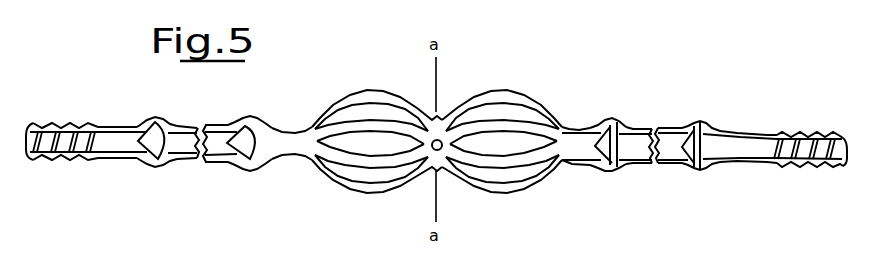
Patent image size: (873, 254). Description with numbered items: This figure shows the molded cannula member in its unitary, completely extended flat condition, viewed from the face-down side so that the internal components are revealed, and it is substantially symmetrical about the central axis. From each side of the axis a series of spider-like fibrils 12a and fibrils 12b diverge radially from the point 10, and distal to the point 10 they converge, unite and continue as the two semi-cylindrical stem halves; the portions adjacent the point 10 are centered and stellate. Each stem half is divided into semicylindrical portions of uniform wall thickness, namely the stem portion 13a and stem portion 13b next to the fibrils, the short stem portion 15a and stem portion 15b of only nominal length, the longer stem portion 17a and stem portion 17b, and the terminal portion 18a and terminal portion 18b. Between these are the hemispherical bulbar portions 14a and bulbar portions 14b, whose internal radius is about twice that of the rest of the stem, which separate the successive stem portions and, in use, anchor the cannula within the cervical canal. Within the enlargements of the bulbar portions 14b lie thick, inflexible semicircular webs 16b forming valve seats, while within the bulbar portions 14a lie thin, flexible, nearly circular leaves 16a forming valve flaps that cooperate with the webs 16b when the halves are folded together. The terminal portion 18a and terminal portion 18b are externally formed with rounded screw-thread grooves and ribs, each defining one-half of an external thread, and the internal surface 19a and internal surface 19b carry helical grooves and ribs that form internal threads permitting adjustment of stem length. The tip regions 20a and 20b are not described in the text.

The point 10 is at (438, 152).
The fibrils 12a is at (385, 188).
The fibrils 12b is at (472, 180).
The stem portion 13a is at (287, 128).
The stem portion 13b is at (570, 128).
The bulbar portion 14a is at (165, 166).
The bulbar portion 14b is at (604, 170).
The stem portion 15a is at (188, 127).
The stem portion 15b is at (670, 126).
The leaves 16a is at (157, 133).
The webs 16b is at (616, 142).
The stem portion 17a is at (123, 162).
The stem portion 17b is at (739, 165).
The terminal portion 18a is at (60, 160).
The terminal portion 18b is at (797, 167).
The internal surface 19a is at (73, 138).
The internal surface 19b is at (793, 147).
The left tip 20a is at (28, 152).
The right tip 20b is at (846, 162).